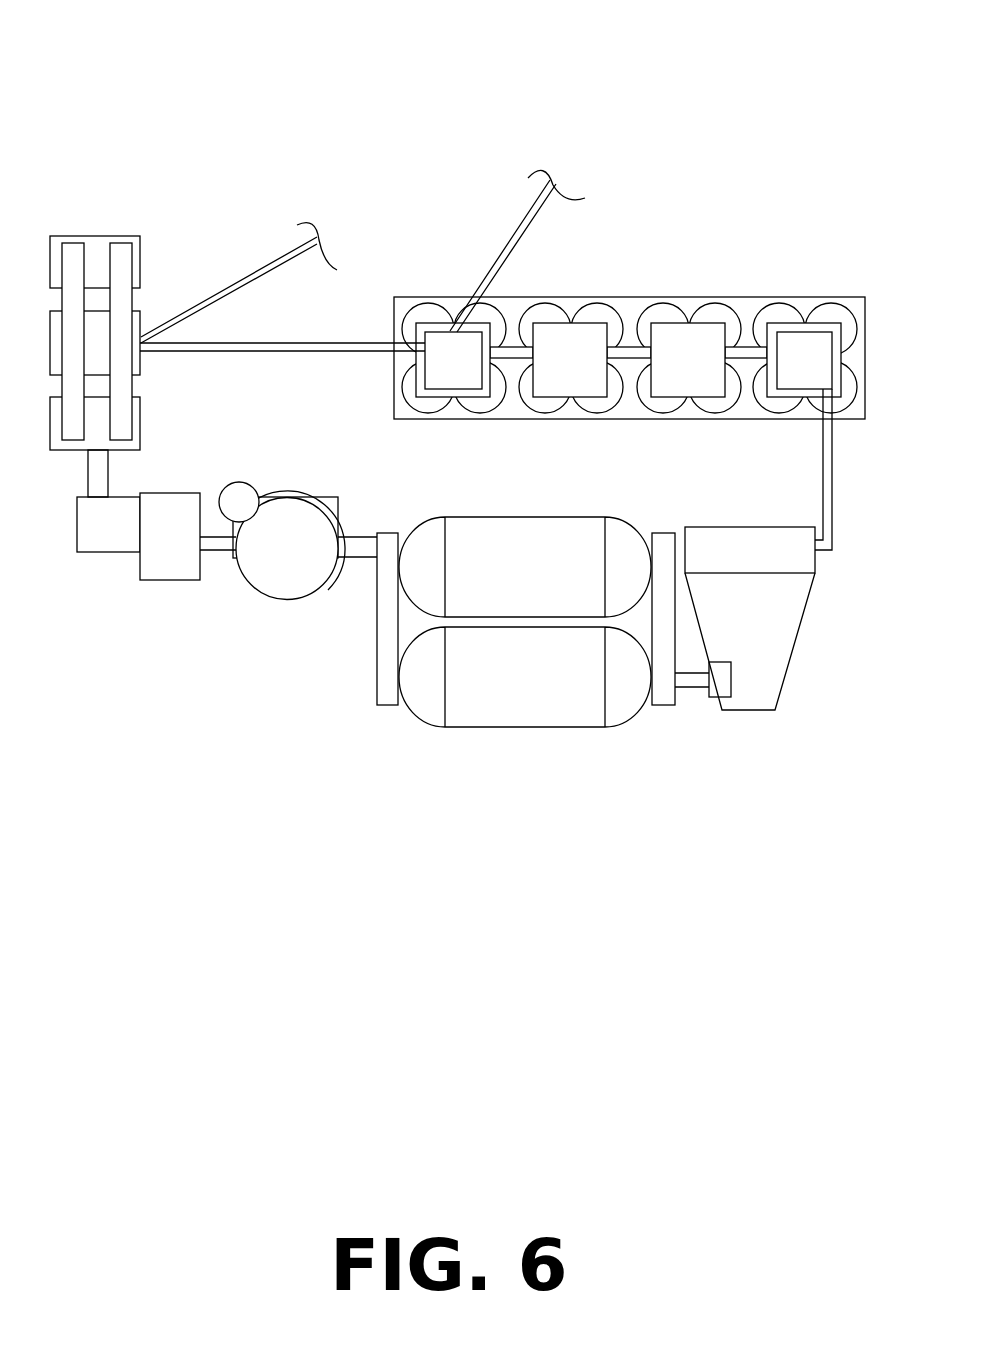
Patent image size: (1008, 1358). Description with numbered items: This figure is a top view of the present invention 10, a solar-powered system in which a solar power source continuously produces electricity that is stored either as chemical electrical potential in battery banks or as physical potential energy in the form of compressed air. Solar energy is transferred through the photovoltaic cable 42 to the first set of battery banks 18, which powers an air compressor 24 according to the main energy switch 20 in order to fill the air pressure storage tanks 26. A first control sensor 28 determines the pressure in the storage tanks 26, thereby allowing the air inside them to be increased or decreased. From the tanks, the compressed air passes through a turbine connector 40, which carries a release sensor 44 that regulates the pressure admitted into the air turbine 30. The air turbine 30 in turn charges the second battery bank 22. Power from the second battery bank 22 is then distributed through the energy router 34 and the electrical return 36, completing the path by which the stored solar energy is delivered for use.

The present invention 10 is at (797, 125).
The first set of battery banks 18 is at (96, 263).
The main energy switch 20 is at (162, 562).
The second battery bank 22 is at (594, 327).
The air compressor 24 is at (270, 580).
The air pressure storage tanks 26 is at (483, 597).
The first control sensor 28 is at (383, 648).
The air turbine 30 is at (765, 664).
The energy router 34 is at (435, 373).
The electrical return 36 is at (533, 210).
The turbine connector 40 is at (663, 655).
The photovoltaic cable 42 is at (268, 267).
The release sensor 44 is at (667, 687).